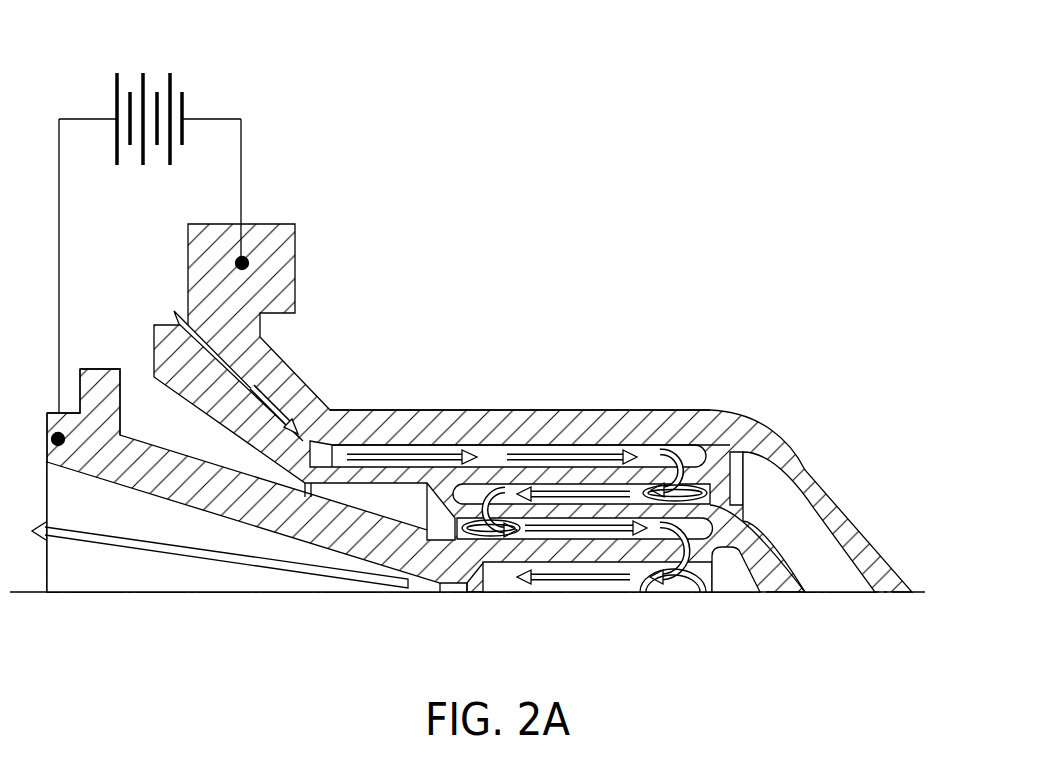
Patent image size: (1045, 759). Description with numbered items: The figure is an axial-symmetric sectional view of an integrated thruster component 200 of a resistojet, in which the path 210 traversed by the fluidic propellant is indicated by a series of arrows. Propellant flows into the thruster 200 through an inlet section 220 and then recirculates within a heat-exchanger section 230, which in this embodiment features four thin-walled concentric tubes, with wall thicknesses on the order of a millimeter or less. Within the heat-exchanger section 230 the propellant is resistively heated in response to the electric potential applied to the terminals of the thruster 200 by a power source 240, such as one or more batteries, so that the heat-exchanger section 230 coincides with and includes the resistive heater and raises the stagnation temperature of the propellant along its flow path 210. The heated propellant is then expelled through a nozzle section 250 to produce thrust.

The integrated thruster component 200 is at (572, 225).
The path 210 is at (395, 445).
The inlet section 220 is at (207, 260).
The heat-exchanger section 230 is at (575, 423).
The power source 240 is at (173, 80).
The nozzle section 250 is at (87, 437).